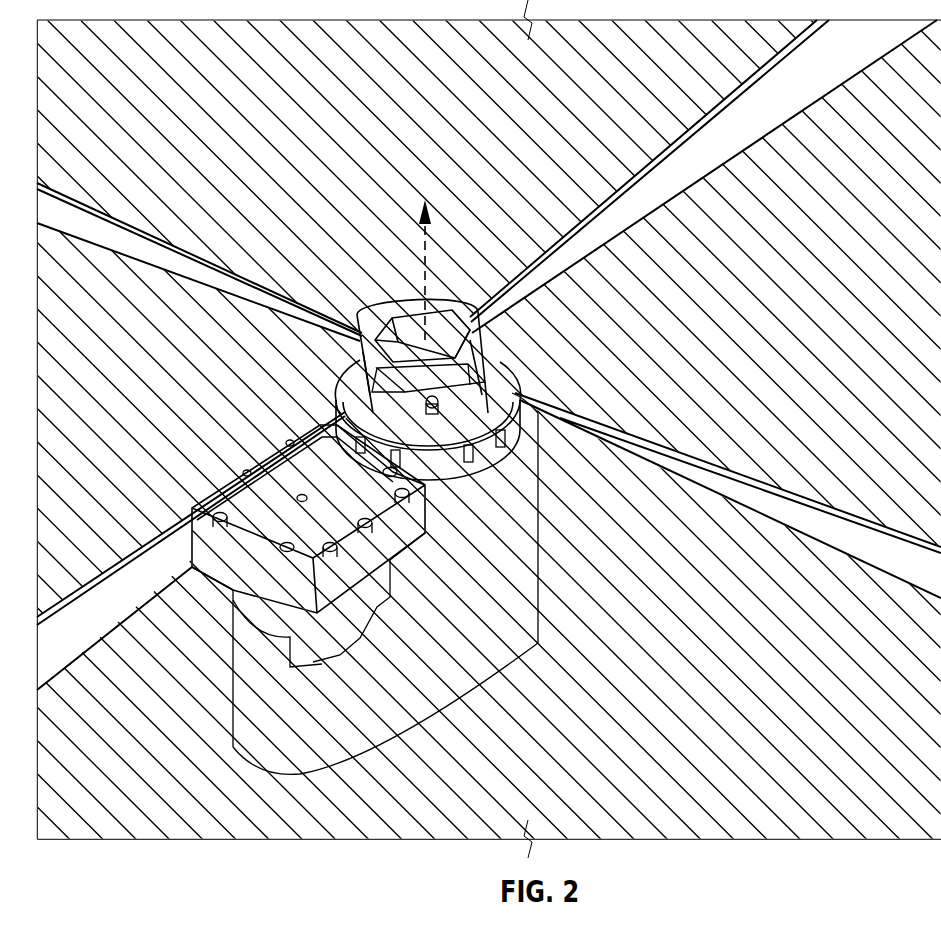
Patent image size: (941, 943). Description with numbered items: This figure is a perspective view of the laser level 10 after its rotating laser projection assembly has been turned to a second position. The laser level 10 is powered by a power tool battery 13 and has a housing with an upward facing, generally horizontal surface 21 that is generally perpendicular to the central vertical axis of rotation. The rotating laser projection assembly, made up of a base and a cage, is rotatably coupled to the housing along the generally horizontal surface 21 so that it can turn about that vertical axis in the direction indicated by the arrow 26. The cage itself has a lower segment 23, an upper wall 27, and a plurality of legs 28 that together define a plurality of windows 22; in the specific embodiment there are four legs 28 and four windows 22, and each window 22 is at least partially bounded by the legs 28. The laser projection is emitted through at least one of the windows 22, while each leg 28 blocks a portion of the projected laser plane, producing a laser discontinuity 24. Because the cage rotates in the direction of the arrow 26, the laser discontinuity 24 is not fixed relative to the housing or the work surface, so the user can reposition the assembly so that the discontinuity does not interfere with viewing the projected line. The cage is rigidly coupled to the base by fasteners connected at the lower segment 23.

The laser level 10 is at (590, 92).
The power tool battery 13 is at (408, 563).
The generally horizontal surface 21 is at (437, 492).
The window 22 is at (512, 456).
The lower segment 23 is at (345, 378).
The laser discontinuity 24 is at (802, 536).
The arrow 26 is at (450, 300).
The upper wall 27 is at (475, 350).
The leg 28 is at (462, 384).